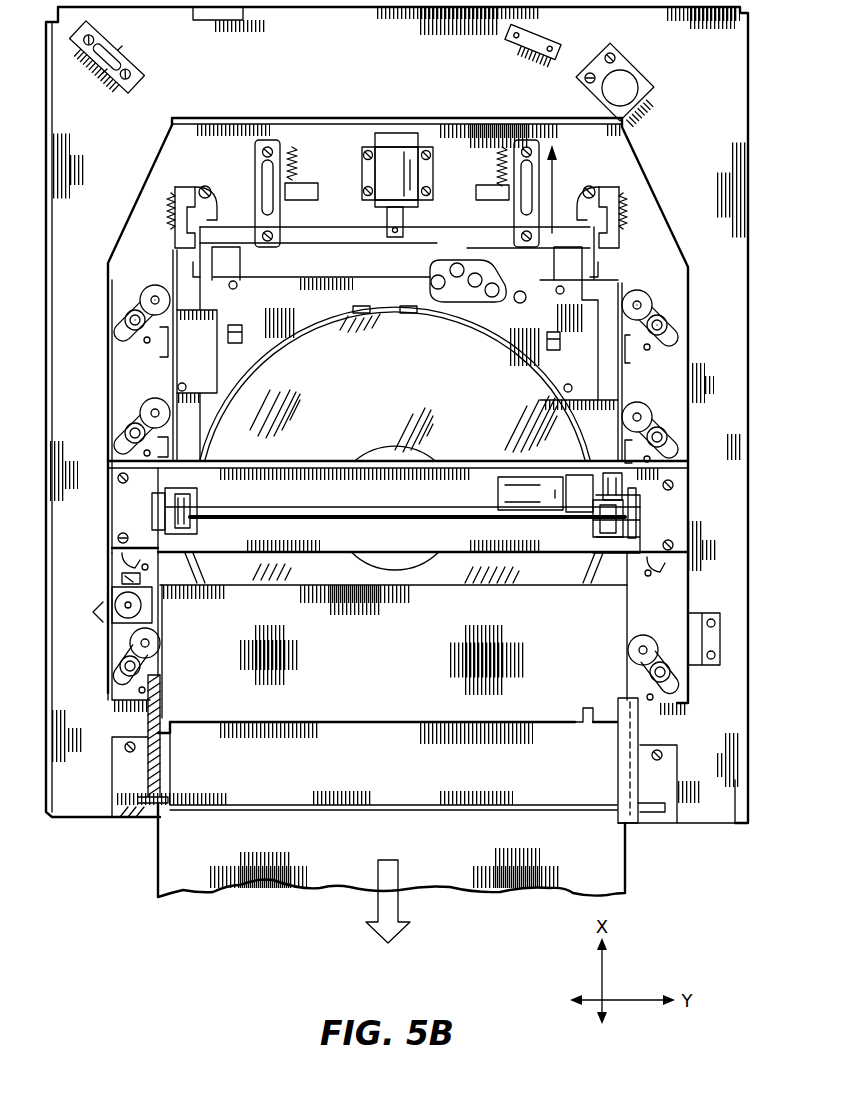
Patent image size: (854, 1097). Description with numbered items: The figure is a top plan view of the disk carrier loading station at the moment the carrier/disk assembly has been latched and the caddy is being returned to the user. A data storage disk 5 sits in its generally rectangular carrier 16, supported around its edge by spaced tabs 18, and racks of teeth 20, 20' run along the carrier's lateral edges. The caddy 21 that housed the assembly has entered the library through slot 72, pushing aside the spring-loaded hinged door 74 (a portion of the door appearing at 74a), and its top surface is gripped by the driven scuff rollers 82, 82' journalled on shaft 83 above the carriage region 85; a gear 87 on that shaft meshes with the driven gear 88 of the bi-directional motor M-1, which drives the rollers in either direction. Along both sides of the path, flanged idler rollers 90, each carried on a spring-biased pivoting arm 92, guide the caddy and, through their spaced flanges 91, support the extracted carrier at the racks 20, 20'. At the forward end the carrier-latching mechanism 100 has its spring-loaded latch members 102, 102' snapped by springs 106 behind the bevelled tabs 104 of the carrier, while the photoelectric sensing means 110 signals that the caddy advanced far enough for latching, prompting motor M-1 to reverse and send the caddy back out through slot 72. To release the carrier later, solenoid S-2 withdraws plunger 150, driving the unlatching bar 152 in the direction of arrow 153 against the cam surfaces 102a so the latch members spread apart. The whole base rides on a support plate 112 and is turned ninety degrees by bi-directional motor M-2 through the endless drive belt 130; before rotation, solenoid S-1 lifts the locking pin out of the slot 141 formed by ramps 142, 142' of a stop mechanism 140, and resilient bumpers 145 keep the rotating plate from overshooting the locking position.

The data storage disk 5 is at (384, 404).
The carrier 16 is at (361, 271).
The spaced tabs 18 is at (408, 316).
The rack of teeth 20 is at (639, 373).
The rack of teeth 20' is at (149, 355).
The caddy 21 is at (378, 670).
The slot 72 is at (158, 862).
The hinged door 74 is at (378, 780).
The tab 74a is at (582, 716).
The scuff roller 82 is at (192, 508).
The scuff roller 82' is at (655, 513).
The driven shaft 83 is at (320, 507).
The carriage plate 85 is at (415, 548).
The gear 87 is at (602, 538).
The driven gear 88 is at (612, 473).
The flanged idler roller 90 is at (142, 292).
The flange 91 is at (140, 302).
The arm 92 is at (120, 332).
The carrier-latching mechanism 100 is at (466, 112).
The latch member 102 is at (616, 262).
The latch member 102' is at (171, 262).
The cam surface 102a is at (220, 220).
The bevelled tab 104 is at (214, 262).
The spring 106 is at (168, 205).
The photoelectric sensing means 110 is at (468, 308).
The support plate 112 is at (280, 86).
The endless drive belt 130 is at (620, 120).
The stop mechanism 140 is at (150, 75).
The slot 141 is at (120, 50).
The ramp 142 is at (99, 315).
The ramp 142' is at (83, 93).
The resilient bumper 145 is at (228, 21).
The plunger 150 is at (388, 218).
The unlatching bar 152 is at (425, 230).
The arrow 153 is at (560, 163).
The bi-directional motor M-1 is at (498, 490).
The bi-directional motor M-2 is at (615, 83).
The solenoid S-1 is at (142, 604).
The solenoid S-2 is at (401, 134).